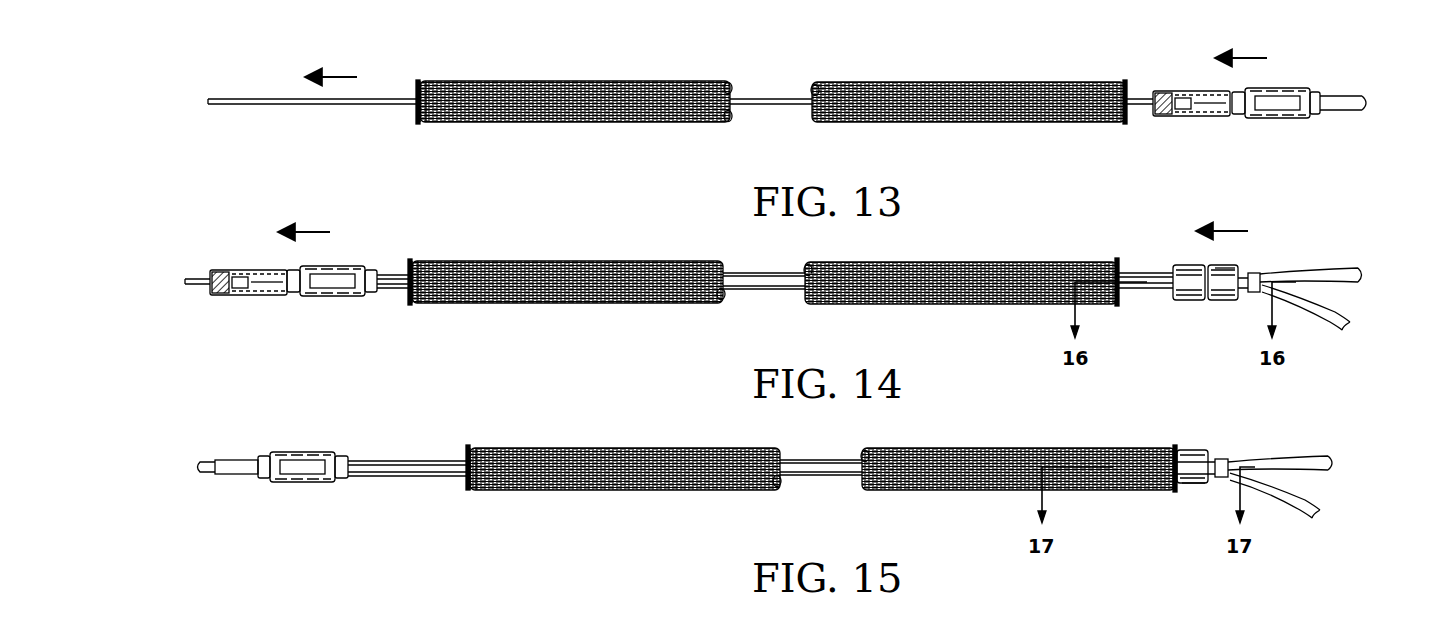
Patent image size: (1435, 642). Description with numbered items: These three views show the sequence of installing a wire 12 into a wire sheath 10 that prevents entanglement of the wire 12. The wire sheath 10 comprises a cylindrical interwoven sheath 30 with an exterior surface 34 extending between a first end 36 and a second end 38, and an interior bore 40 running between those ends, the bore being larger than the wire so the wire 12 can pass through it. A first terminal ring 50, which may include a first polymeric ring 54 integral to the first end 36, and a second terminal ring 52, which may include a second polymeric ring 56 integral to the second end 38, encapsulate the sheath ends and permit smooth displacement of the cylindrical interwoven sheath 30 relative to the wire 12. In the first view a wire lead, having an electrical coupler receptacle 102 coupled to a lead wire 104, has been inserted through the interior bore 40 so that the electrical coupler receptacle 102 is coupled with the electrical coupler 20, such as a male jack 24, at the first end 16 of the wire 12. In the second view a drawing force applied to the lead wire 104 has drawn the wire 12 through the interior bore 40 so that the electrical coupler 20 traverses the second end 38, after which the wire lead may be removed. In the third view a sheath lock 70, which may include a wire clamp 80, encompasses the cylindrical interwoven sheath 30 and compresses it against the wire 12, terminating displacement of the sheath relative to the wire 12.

In FIG. 13, the wire sheath 10 is at (578, 34).
In FIG. 14, the wire sheath 10 is at (571, 214).
In FIG. 15, the wire sheath 10 is at (629, 398).
In FIG. 13, the wire 12 is at (1340, 110).
In FIG. 14, the wire 12 is at (764, 273).
In FIG. 15, the wire 12 is at (824, 460).
In FIG. 13, the first end 16 is at (1278, 88).
In FIG. 14, the first end 16 is at (333, 266).
In FIG. 15, the first end 16 is at (303, 452).
In FIG. 13, the electrical coupler 20 is at (1306, 88).
In FIG. 14, the electrical coupler 20 is at (360, 266).
In FIG. 15, the electrical coupler 20 is at (331, 452).
In FIG. 13, the male jack 24 is at (1196, 108).
In FIG. 14, the male jack 24 is at (252, 287).
In FIG. 15, the male jack 24 is at (224, 470).
In FIG. 13, the cylindrical interwoven sheath 30 is at (650, 81).
In FIG. 14, the cylindrical interwoven sheath 30 is at (640, 261).
In FIG. 15, the cylindrical interwoven sheath 30 is at (698, 448).
In FIG. 13, the exterior surface 34 is at (850, 83).
In FIG. 14, the exterior surface 34 is at (843, 262).
In FIG. 15, the exterior surface 34 is at (900, 448).
In FIG. 13, the first end 36 is at (1121, 82).
In FIG. 14, the first end 36 is at (1113, 260).
In FIG. 15, the first end 36 is at (1171, 447).
In FIG. 13, the second end 38 is at (425, 121).
In FIG. 14, the second end 38 is at (418, 302).
In FIG. 15, the second end 38 is at (476, 489).
In FIG. 13, the interior bore 40 is at (733, 117).
In FIG. 14, the interior bore 40 is at (726, 296).
In FIG. 15, the interior bore 40 is at (783, 483).
In FIG. 14, the first terminal ring 50 is at (1119, 306).
In FIG. 14, the second terminal ring 52 is at (413, 259).
In FIG. 13, the first polymeric ring 54 is at (1125, 124).
In FIG. 15, the first polymeric ring 54 is at (1177, 492).
In FIG. 13, the second polymeric ring 56 is at (421, 81).
In FIG. 15, the second polymeric ring 56 is at (471, 445).
In FIG. 14, the sheath lock 70 is at (1185, 265).
In FIG. 15, the sheath lock 70 is at (1192, 450).
In FIG. 14, the wire clamp 80 is at (1222, 300).
In FIG. 15, the wire clamp 80 is at (1200, 483).
In FIG. 13, the electrical coupler receptacle 102 is at (1178, 91).
In FIG. 14, the electrical coupler receptacle 102 is at (232, 270).
In FIG. 13, the lead wire 104 is at (315, 105).
In FIG. 14, the lead wire 104 is at (192, 286).